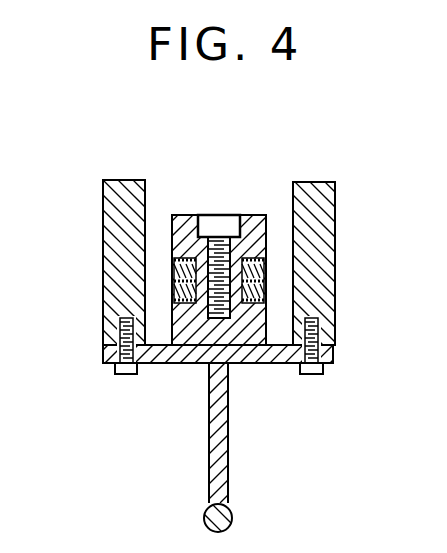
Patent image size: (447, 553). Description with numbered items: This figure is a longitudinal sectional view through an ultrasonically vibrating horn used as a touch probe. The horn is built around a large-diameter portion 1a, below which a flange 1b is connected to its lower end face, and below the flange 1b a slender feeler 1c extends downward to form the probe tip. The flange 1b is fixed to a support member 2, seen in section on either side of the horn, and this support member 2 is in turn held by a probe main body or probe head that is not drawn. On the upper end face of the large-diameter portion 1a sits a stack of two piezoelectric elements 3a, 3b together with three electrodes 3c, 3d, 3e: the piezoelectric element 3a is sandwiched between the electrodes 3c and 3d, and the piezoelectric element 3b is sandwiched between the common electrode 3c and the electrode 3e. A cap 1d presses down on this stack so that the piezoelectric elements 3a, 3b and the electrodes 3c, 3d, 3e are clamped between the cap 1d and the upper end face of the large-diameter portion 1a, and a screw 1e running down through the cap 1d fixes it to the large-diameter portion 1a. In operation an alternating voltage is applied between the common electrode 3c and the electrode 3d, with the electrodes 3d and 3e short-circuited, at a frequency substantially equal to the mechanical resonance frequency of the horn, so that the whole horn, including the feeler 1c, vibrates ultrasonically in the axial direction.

The large-diameter portion 1a is at (187, 323).
The flange 1b is at (325, 358).
The feeler 1c is at (228, 455).
The cap 1d is at (257, 220).
The screw 1e is at (212, 222).
The support member 2 is at (312, 187).
The piezoelectric element 3a is at (177, 270).
The piezoelectric element 3b is at (177, 284).
The common electrode 3c is at (266, 281).
The electrode 3d is at (266, 262).
The electrode 3e is at (266, 300).